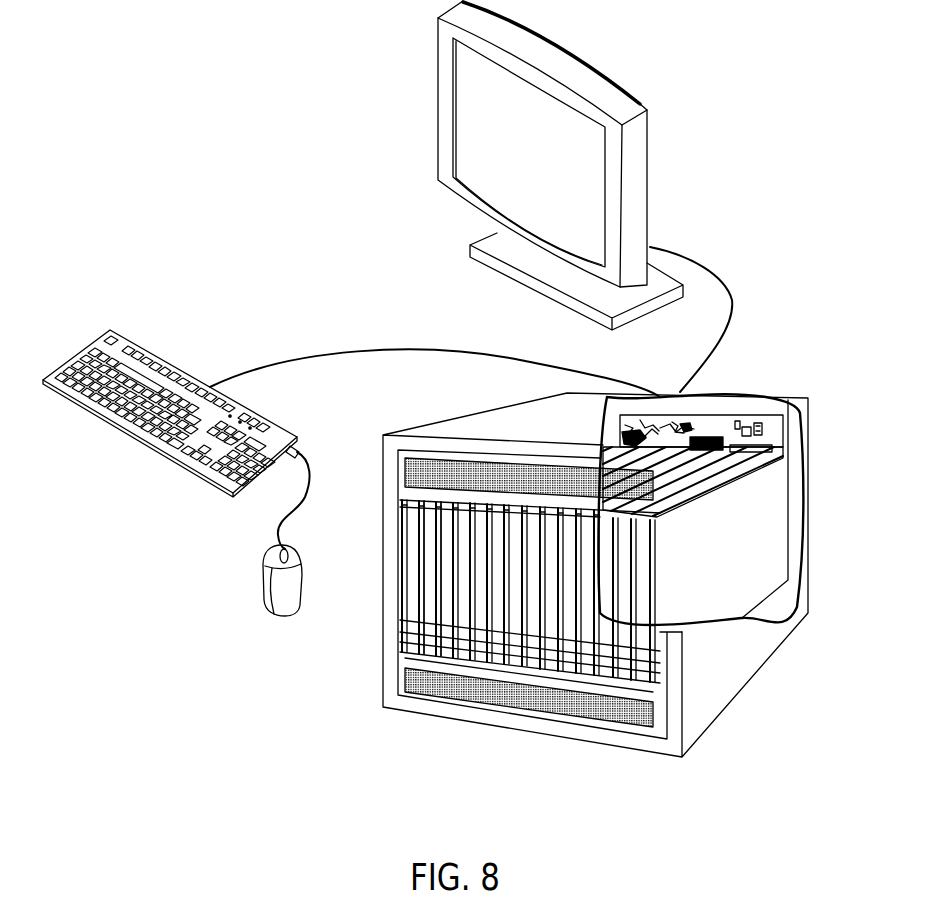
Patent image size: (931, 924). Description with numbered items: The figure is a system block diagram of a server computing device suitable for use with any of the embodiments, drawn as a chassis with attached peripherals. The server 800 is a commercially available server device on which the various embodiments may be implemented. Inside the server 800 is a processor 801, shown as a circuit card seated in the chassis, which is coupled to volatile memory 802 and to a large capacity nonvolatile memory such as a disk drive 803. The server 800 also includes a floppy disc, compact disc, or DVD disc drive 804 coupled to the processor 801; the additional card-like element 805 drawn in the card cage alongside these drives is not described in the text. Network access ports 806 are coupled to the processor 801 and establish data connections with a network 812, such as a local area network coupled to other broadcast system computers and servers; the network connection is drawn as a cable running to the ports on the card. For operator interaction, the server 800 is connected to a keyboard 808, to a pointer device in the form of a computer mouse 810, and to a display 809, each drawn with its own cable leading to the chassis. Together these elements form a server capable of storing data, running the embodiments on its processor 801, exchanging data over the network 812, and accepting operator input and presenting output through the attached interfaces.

The server 800 is at (575, 530).
The processor 801 is at (683, 406).
The volatile memory 802 is at (772, 437).
The disk drive 803 is at (442, 548).
The disc drive 804 is at (408, 597).
The card slot board 805 is at (423, 572).
The network access ports 806 is at (710, 443).
The keyboard 808 is at (168, 363).
The display 809 is at (648, 193).
The computer mouse 810 is at (272, 612).
The network 812 is at (750, 417).